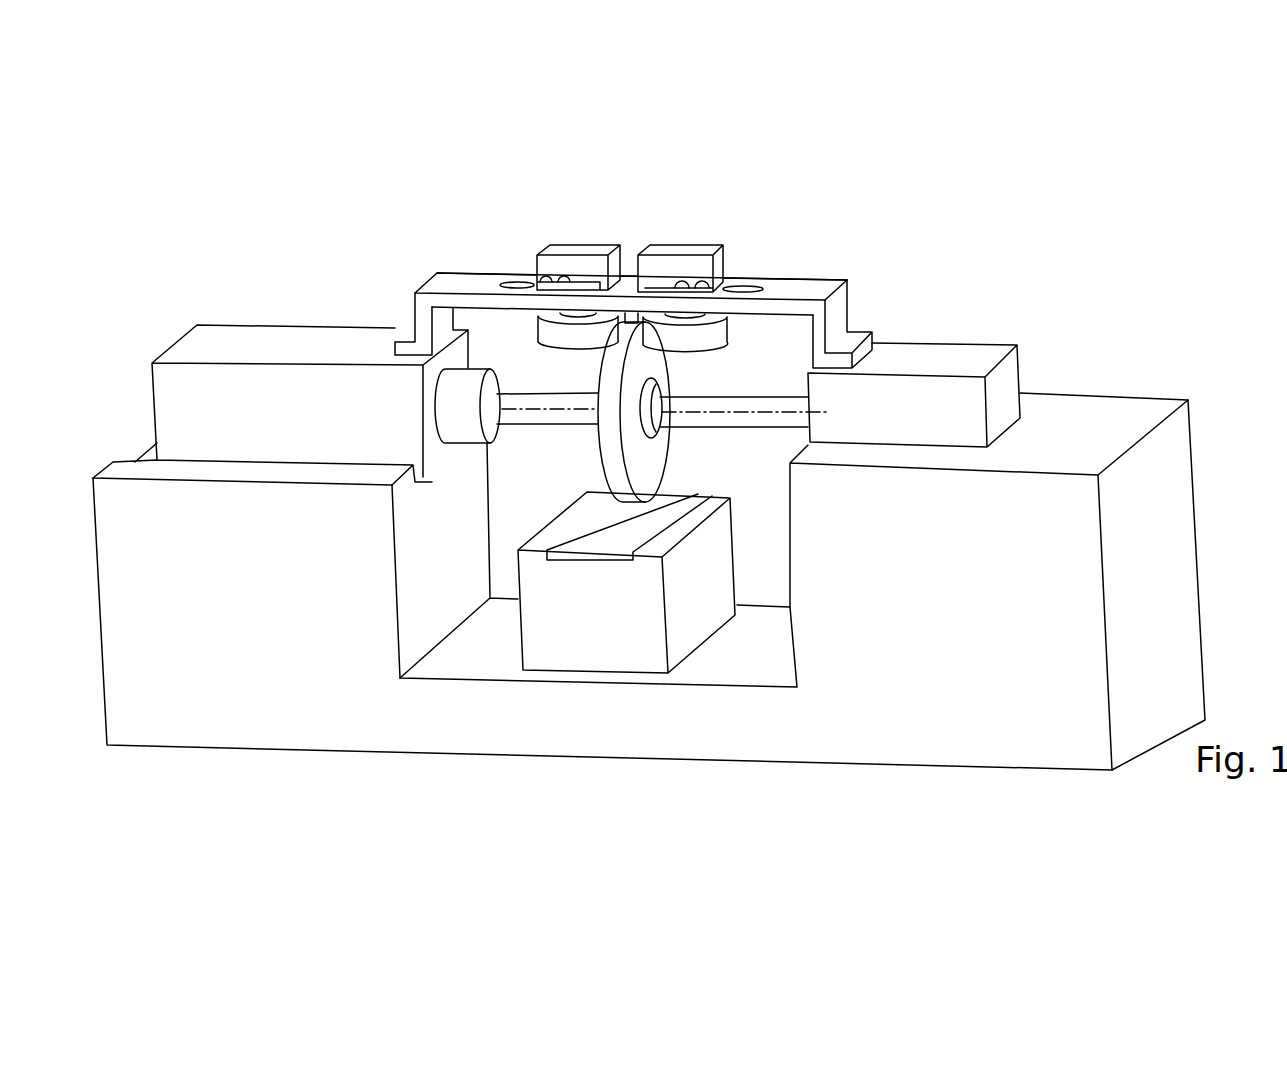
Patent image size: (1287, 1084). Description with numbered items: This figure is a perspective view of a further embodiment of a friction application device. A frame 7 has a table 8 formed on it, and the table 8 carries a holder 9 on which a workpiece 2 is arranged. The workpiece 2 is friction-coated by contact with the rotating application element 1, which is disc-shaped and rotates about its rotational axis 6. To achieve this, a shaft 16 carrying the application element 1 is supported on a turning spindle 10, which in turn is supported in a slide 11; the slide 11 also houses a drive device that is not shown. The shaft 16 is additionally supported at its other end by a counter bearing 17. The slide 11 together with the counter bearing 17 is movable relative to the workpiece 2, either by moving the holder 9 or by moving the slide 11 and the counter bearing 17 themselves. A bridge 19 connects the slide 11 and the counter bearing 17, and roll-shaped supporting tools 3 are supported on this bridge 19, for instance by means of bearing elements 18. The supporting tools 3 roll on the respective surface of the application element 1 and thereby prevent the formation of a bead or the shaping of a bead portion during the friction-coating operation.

The application element 1 is at (633, 322).
The workpiece 2 is at (593, 552).
The roll-shaped supporting tools 3 is at (550, 333).
The rotational axis 6 is at (762, 408).
The frame 7 is at (1192, 487).
The table 8 is at (487, 660).
The holder 9 is at (583, 647).
The turning spindle 10 is at (462, 410).
The slide 11 is at (222, 362).
The shaft 16 is at (537, 423).
The counter bearing 17 is at (942, 374).
The bearing elements 18 is at (587, 253).
The bridge 19 is at (805, 300).